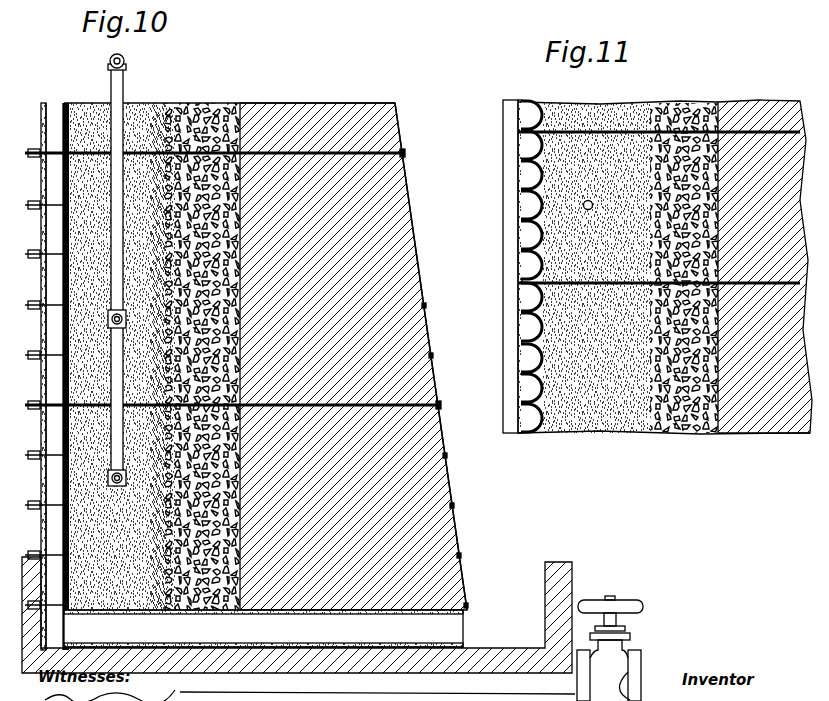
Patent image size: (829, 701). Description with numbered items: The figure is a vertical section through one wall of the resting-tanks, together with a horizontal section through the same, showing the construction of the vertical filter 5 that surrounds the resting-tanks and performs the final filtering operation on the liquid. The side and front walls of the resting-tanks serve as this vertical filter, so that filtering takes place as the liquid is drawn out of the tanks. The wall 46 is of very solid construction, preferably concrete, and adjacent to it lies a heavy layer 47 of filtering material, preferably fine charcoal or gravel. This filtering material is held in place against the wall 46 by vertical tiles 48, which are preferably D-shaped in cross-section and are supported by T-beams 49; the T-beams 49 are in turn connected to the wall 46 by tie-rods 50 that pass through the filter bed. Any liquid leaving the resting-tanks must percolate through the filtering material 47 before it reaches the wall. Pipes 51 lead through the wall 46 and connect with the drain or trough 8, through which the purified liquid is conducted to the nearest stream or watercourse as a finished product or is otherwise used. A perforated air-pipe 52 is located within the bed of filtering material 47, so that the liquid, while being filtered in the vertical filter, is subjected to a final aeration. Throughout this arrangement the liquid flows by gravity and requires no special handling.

In FIG. 10, the vertical filter 5 is at (350, 335).
In FIG. 11, the vertical filter 5 is at (751, 247).
In FIG. 10, the trough 8 is at (297, 615).
In FIG. 10, the wall 46 is at (437, 183).
In FIG. 11, the wall 46 is at (775, 453).
In FIG. 10, the layer of filtering material 47 is at (196, 346).
In FIG. 11, the layer of filtering material 47 is at (661, 259).
In FIG. 10, the vertical tiles 48 is at (57, 105).
In FIG. 11, the vertical tiles 48 is at (526, 205).
In FIG. 10, the T-beams 49 is at (78, 628).
In FIG. 11, the T-beams 49 is at (510, 296).
In FIG. 10, the tie-rods 50 is at (400, 141).
In FIG. 11, the tie-rods 50 is at (790, 283).
In FIG. 10, the pipes 51 is at (263, 628).
In FIG. 10, the perforated air-pipe 52 is at (118, 92).
In FIG. 11, the perforated air-pipe 52 is at (582, 200).